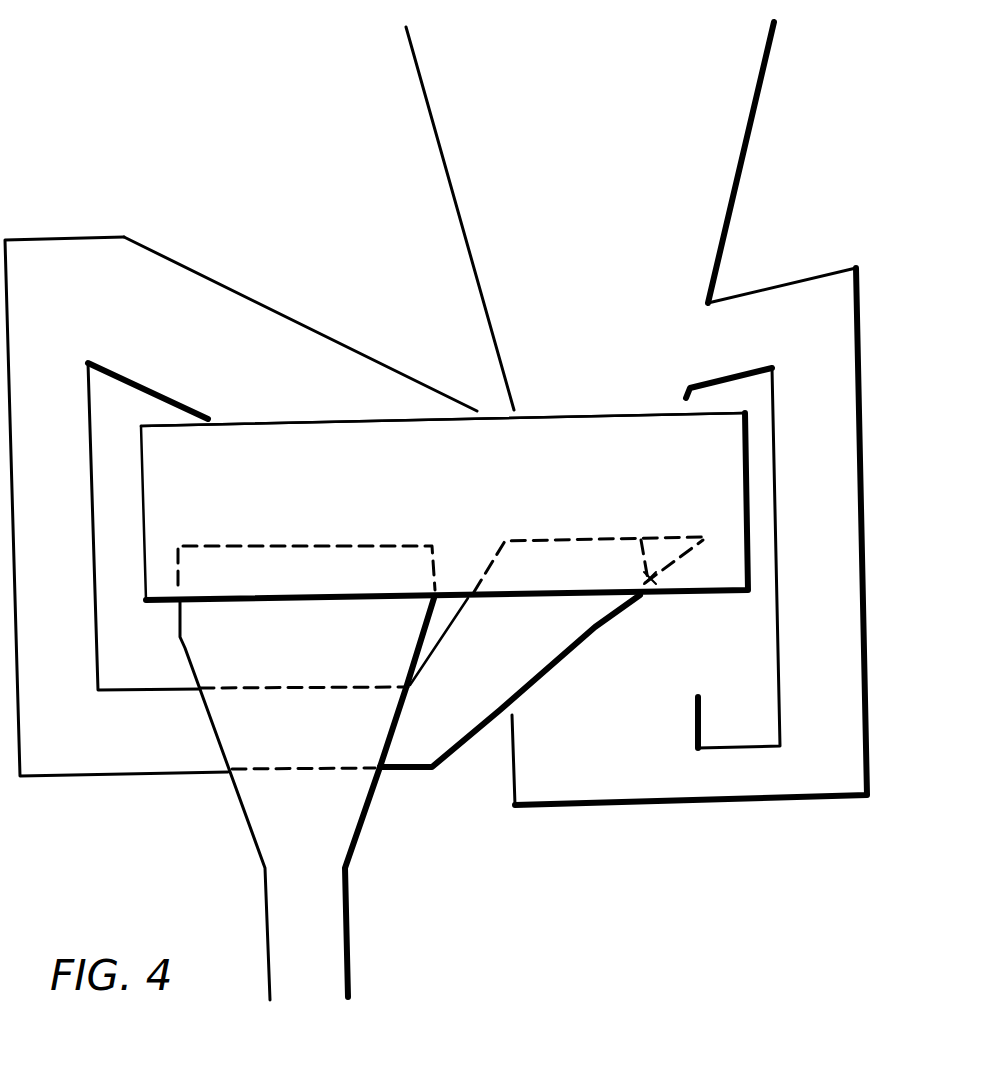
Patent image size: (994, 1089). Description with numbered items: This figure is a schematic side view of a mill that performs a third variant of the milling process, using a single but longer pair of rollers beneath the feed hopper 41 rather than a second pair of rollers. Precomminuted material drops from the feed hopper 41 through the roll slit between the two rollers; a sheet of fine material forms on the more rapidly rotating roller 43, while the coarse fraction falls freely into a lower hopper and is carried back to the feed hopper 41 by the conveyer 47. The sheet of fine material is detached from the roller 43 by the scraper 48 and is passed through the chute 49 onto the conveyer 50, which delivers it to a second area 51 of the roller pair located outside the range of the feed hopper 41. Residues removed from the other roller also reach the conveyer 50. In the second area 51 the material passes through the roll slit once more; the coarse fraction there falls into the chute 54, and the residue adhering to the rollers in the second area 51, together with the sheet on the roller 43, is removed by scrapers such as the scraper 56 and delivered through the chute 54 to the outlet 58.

The feed hopper 41 is at (722, 110).
The roller 43 is at (494, 432).
The conveyer 47 is at (800, 612).
The scraper 48 is at (660, 600).
The chute 49 is at (567, 632).
The conveyer 50 is at (70, 503).
The second area 51 is at (318, 438).
The chute 54 is at (358, 795).
The scraper 56 is at (283, 546).
The outlet 58 is at (330, 935).